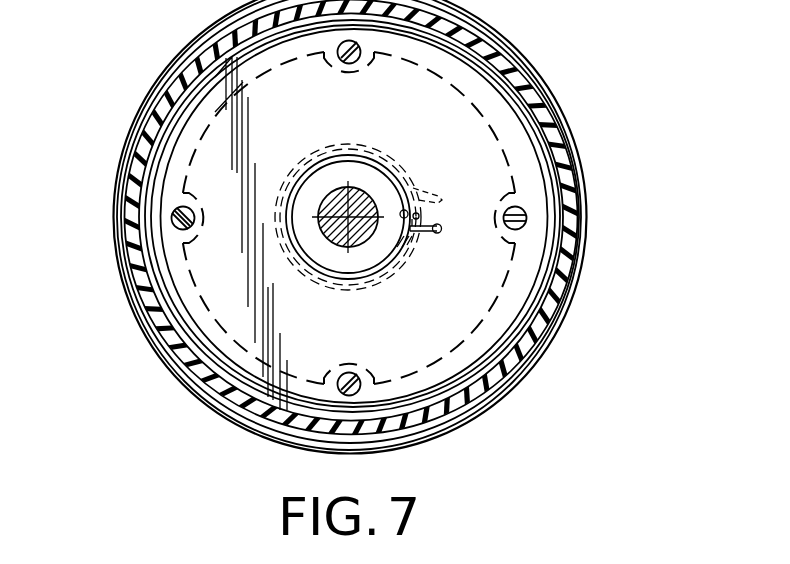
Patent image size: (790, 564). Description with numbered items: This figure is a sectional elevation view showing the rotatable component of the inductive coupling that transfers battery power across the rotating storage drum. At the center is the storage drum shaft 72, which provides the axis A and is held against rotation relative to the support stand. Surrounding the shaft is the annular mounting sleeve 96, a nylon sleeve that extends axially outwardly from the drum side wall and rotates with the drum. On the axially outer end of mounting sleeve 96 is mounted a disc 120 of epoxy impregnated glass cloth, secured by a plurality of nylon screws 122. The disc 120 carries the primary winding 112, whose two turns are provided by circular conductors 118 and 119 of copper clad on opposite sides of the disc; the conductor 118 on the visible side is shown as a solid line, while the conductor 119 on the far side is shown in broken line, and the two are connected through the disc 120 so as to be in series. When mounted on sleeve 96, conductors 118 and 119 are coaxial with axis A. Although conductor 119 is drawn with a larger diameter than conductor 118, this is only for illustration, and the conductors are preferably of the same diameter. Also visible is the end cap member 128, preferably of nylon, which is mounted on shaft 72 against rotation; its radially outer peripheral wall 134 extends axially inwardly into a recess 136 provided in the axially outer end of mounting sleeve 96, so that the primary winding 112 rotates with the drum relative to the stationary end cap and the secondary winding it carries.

The storage drum shaft 72 is at (356, 192).
The annular mounting sleeve 96 is at (588, 196).
The primary winding 112 is at (312, 139).
The circular conductor 118 is at (378, 263).
The circular conductor 119 is at (350, 287).
The disc 120 is at (505, 137).
The nylon screws 122 is at (173, 223).
The end cap member 128 is at (514, 392).
The radially outer peripheral wall 134 is at (562, 268).
The recess 136 is at (528, 340).
The axis A is at (372, 203).